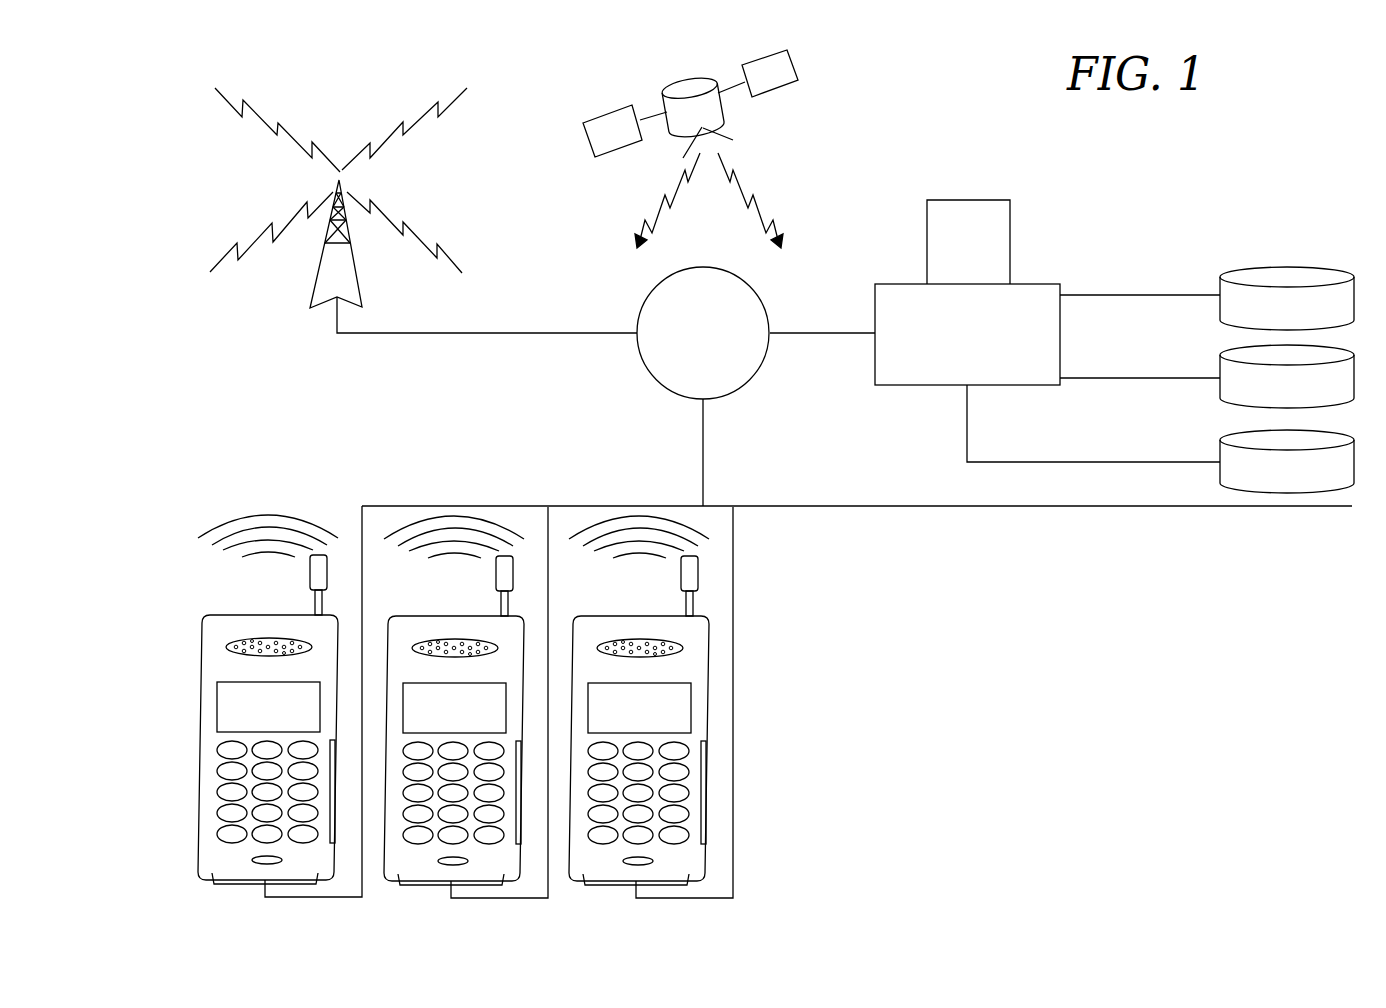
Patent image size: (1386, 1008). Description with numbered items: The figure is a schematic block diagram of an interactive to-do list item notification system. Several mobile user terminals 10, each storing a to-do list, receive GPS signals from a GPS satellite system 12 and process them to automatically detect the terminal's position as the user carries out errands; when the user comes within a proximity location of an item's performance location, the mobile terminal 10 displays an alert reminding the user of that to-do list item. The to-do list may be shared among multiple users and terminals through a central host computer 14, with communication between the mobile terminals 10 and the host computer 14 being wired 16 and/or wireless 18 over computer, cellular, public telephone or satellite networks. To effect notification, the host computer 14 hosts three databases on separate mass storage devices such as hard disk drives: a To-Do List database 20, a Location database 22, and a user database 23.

The mobile user terminal 10 is at (268, 613).
The GPS satellite system 12 is at (770, 83).
The central host computer 14 is at (1010, 200).
The wired communication 16 is at (883, 506).
The wireless communication 18 is at (352, 257).
The To-Do List database 20 is at (1238, 268).
The Location database 22 is at (1238, 347).
The user database 23 is at (1238, 432).